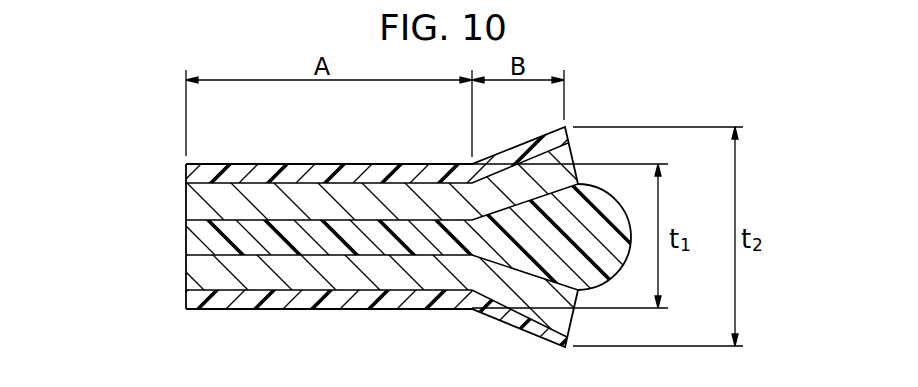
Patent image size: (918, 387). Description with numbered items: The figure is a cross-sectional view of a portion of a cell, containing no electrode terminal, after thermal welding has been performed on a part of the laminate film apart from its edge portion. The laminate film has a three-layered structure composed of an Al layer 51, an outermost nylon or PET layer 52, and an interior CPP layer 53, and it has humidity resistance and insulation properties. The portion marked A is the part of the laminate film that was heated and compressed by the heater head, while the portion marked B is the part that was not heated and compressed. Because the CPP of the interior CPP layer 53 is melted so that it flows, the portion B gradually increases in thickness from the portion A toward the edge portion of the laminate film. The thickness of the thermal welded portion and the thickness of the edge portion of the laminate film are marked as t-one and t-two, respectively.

The Al layer 51 is at (201, 197).
The outermost nylon or PET layer 52 is at (197, 168).
The interior CPP layer 53 is at (202, 236).